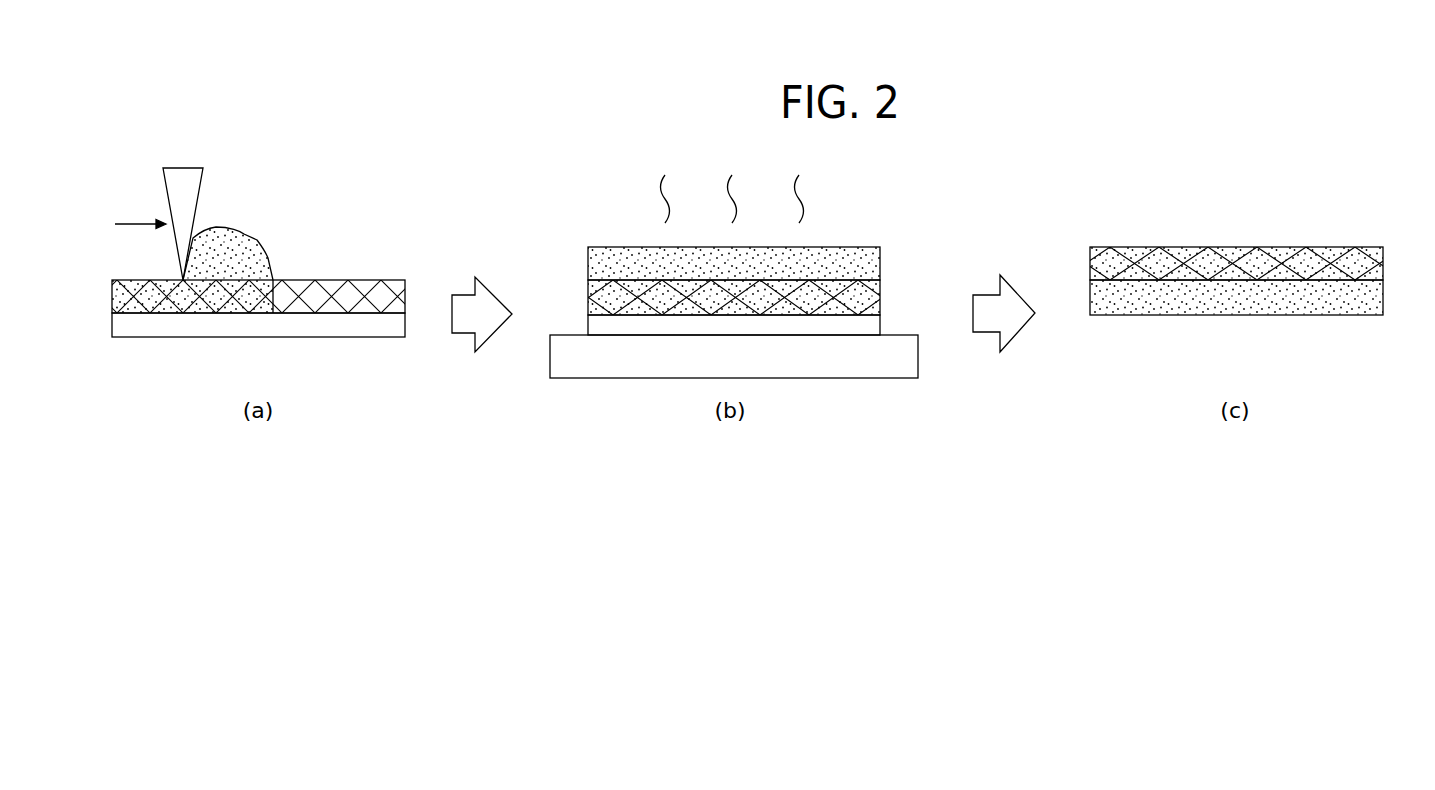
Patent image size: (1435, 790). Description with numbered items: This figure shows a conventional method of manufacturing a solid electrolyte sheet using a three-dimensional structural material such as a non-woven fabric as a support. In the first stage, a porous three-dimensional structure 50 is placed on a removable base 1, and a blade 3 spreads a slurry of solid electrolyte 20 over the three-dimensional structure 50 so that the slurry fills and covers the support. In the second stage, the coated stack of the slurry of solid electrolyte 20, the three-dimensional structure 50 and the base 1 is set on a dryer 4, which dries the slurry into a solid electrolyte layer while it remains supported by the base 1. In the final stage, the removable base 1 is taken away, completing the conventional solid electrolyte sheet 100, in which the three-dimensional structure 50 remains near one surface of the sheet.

The base 1 is at (881, 323).
The blade 3 is at (187, 167).
The dryer 4 is at (848, 379).
The slurry of solid electrolyte 20 is at (242, 235).
The three-dimensional structure 50 is at (327, 280).
The conventional solid electrolyte sheet 100 is at (1379, 226).